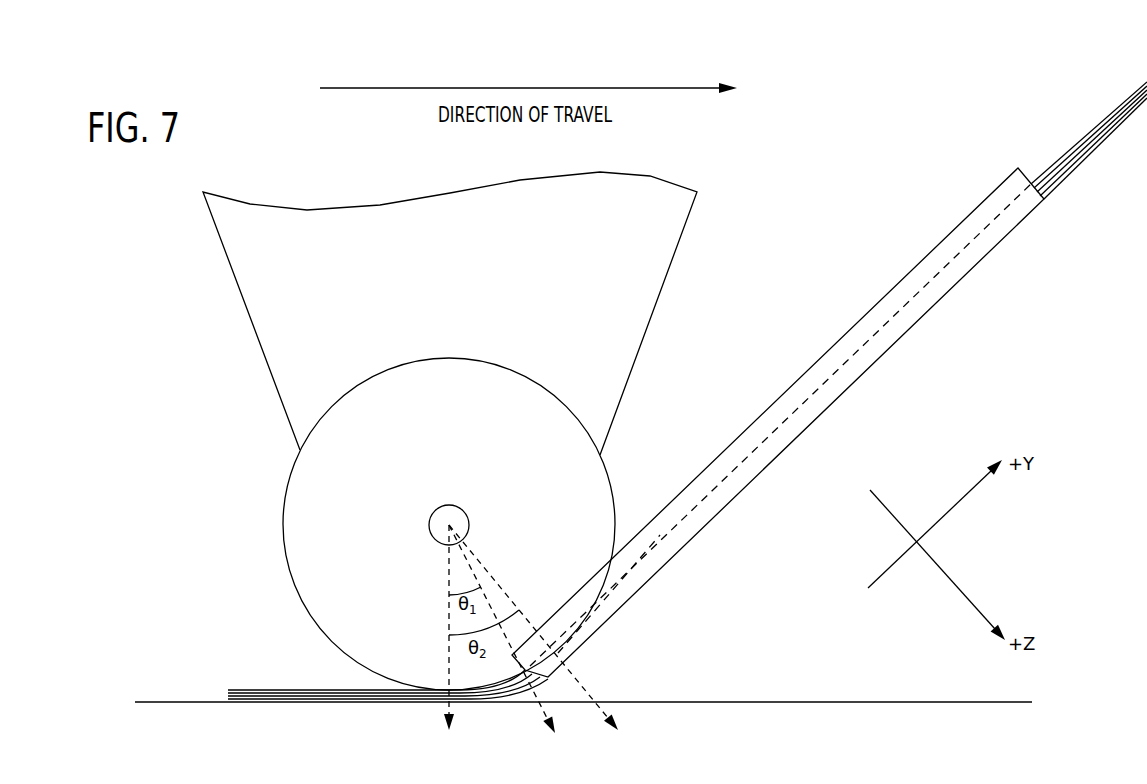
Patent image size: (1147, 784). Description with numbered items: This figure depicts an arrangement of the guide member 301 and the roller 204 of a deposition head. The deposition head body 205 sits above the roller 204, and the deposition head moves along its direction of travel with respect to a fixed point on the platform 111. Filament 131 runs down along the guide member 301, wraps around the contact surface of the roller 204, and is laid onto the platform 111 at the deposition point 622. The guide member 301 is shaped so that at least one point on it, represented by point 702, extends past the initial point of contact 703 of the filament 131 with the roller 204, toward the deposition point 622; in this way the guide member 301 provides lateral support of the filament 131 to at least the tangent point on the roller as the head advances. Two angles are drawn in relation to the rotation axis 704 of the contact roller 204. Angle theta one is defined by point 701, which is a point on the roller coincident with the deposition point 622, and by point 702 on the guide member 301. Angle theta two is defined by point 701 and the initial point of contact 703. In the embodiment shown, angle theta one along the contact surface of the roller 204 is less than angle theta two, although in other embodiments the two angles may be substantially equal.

The platform 111 is at (878, 712).
The filament 131 is at (281, 690).
The roller 204 is at (283, 527).
The deposition head body 205 is at (270, 293).
The guide member 301 is at (821, 358).
The deposition point 622 is at (434, 718).
The point on the roller coincident with deposition point 701 is at (437, 672).
The point on guide member 702 is at (531, 639).
The initial point of contact 703 is at (562, 624).
The rotation axis 704 is at (452, 495).